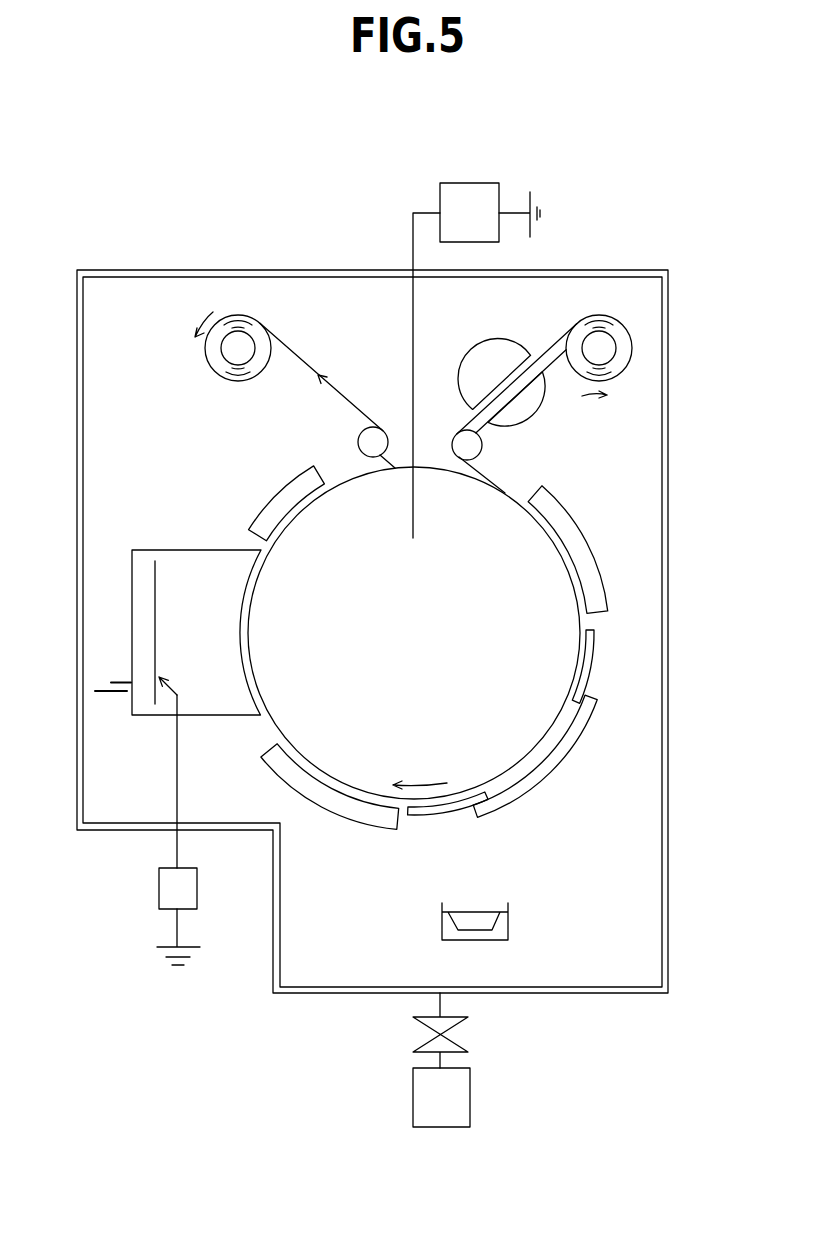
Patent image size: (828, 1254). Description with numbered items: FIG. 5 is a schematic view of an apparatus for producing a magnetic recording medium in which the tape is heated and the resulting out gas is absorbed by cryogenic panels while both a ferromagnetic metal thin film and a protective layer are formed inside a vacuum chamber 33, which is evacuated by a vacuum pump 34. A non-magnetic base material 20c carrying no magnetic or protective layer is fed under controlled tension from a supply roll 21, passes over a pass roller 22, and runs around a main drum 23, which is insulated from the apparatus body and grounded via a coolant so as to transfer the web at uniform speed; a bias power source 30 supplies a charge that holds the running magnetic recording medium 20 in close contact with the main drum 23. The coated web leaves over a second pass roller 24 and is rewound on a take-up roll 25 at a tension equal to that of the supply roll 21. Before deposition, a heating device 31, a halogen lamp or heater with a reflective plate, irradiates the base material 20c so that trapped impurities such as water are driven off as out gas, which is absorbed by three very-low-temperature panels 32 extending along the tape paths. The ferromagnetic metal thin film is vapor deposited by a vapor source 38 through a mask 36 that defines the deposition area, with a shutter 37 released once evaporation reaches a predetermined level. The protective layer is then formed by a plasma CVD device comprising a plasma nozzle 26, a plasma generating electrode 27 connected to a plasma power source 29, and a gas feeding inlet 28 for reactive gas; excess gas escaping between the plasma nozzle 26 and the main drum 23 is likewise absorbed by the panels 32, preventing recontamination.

The magnetic recording medium 20 is at (305, 363).
The non-magnetic base material 20c is at (543, 344).
The supply roll 21 is at (600, 350).
The pass roller 22 is at (482, 448).
The main drum 23 is at (482, 505).
The pass roller 24 is at (362, 440).
The take-up roll 25 is at (233, 352).
The plasma nozzle 26 is at (216, 715).
The plasma generating electrode 27 is at (157, 647).
The gas feeding inlet 28 is at (129, 691).
The plasma power source 29 is at (197, 882).
The bias power source 30 is at (490, 183).
The heating device 31 is at (488, 365).
The very-low-temperature panel 32 is at (265, 490).
The vacuum chamber 33 is at (272, 970).
The vacuum pump 34 is at (470, 1103).
The mask 36 is at (590, 673).
The shutter 37 is at (553, 768).
The vapor source 38 is at (503, 927).